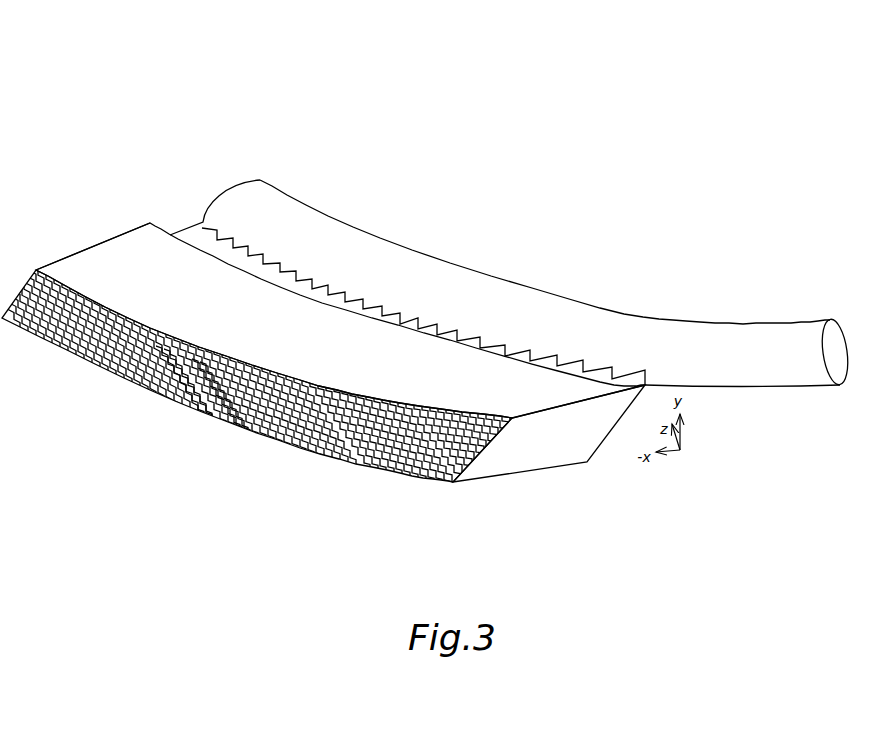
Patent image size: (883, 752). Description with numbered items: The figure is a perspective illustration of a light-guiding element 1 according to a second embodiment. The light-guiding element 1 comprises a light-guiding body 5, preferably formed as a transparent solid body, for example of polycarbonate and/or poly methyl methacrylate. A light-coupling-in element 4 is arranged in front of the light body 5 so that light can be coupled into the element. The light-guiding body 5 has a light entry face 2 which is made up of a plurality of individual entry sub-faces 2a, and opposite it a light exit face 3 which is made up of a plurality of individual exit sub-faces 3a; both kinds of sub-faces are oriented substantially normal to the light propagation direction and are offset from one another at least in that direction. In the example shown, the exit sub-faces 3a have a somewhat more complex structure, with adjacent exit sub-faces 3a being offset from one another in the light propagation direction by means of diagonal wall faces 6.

The light-guiding element 1 is at (483, 389).
The light entry face 2 is at (490, 306).
The entry sub-faces 2a is at (405, 318).
The light exit face 3 is at (178, 421).
The exit sub-faces 3a is at (168, 366).
The light-coupling-in element 4 is at (793, 338).
The light-guiding body 5 is at (127, 257).
The diagonal wall faces 6 is at (203, 371).